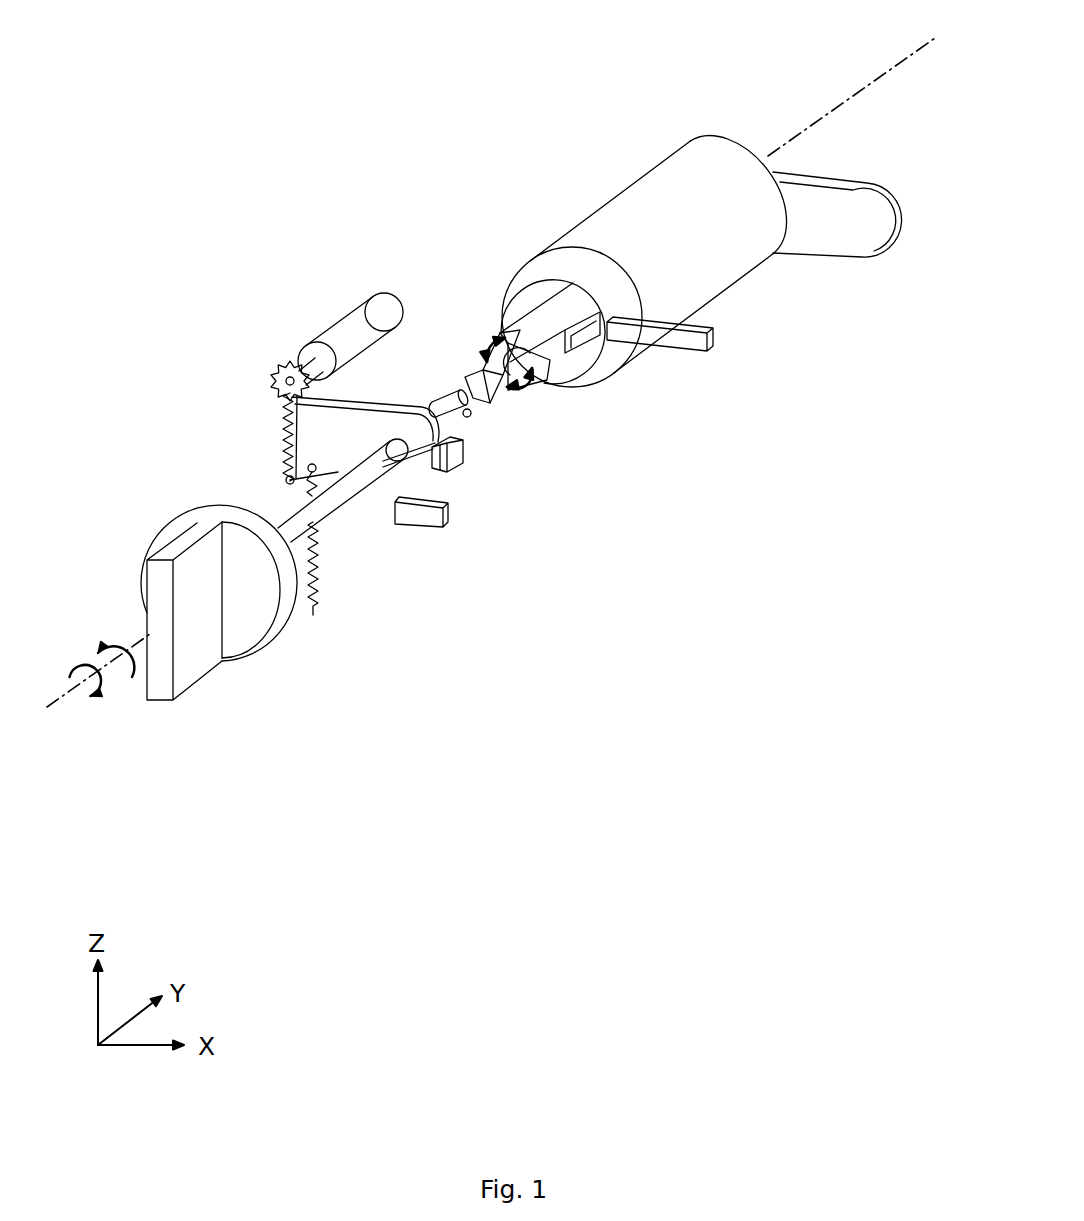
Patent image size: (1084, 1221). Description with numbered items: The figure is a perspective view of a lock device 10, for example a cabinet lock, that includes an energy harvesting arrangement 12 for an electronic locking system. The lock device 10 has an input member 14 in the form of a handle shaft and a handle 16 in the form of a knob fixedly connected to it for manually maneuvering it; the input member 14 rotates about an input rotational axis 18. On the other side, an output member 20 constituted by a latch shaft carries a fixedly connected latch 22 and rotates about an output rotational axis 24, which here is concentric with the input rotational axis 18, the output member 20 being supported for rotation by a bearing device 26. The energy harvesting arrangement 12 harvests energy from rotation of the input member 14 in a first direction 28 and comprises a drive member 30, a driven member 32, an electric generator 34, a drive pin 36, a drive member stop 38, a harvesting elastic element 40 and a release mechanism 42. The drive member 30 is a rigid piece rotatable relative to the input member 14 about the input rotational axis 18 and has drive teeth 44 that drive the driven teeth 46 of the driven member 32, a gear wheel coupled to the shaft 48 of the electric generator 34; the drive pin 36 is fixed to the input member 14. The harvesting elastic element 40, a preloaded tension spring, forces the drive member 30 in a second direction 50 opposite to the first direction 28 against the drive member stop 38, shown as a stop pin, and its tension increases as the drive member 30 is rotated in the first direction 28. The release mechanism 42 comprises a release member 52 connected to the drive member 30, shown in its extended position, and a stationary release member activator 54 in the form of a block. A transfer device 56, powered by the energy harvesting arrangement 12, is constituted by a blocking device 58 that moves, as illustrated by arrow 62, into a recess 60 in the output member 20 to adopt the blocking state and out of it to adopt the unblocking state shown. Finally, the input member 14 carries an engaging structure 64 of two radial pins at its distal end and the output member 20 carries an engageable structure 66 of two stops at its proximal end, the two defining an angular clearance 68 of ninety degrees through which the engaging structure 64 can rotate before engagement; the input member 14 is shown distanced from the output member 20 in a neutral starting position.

The lock device 10 is at (278, 106).
The energy harvesting arrangement 12 is at (215, 354).
The input member 14 is at (328, 503).
The handle 16 is at (193, 648).
The input rotational axis 18 is at (50, 705).
The output member 20 is at (540, 307).
The latch 22 is at (832, 245).
The output rotational axis 24 is at (878, 78).
The bearing device 26 is at (655, 228).
The first direction 28 is at (68, 672).
The drive member 30 is at (326, 443).
The driven member 32 is at (280, 375).
The electric generator 34 is at (350, 330).
The drive pin 36 is at (405, 460).
The drive member stop 38 is at (288, 481).
The harvesting elastic element 40 is at (318, 582).
The release mechanism 42 is at (522, 562).
The drive teeth 44 is at (283, 450).
The driven teeth 46 is at (288, 360).
The shaft 48 is at (282, 383).
The second direction 50 is at (120, 647).
The release member 52 is at (437, 448).
The release member activator 54 is at (422, 518).
The transfer device 56 is at (700, 440).
The blocking device 58 is at (688, 342).
The recess 60 is at (580, 342).
The arrow 62 is at (802, 350).
The engaging structure 64 is at (430, 407).
The engageable structure 66 is at (480, 372).
The angular clearance 68 is at (490, 347).